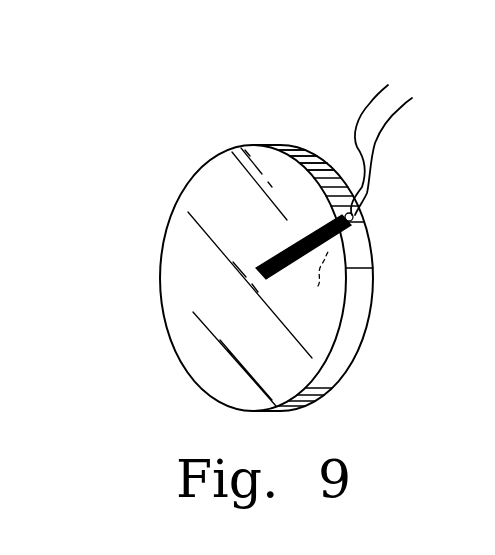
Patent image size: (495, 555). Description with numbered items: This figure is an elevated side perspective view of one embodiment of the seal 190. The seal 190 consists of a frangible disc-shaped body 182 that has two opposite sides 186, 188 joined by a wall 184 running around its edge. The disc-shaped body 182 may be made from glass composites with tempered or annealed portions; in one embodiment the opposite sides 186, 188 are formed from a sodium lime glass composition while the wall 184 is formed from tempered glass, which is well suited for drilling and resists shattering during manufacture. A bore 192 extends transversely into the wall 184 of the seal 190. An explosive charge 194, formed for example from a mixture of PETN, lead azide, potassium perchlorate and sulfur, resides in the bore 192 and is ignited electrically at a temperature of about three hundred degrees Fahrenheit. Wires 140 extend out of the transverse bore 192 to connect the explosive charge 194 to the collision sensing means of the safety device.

The seal 190 is at (138, 178).
The wall 184 is at (347, 340).
The frangible disc-shaped body 182 is at (372, 250).
The opposite side 186 is at (330, 160).
The opposite side 188 is at (275, 341).
The explosive charge 194 is at (272, 259).
The bore 192 is at (327, 281).
The wires 140 is at (388, 118).